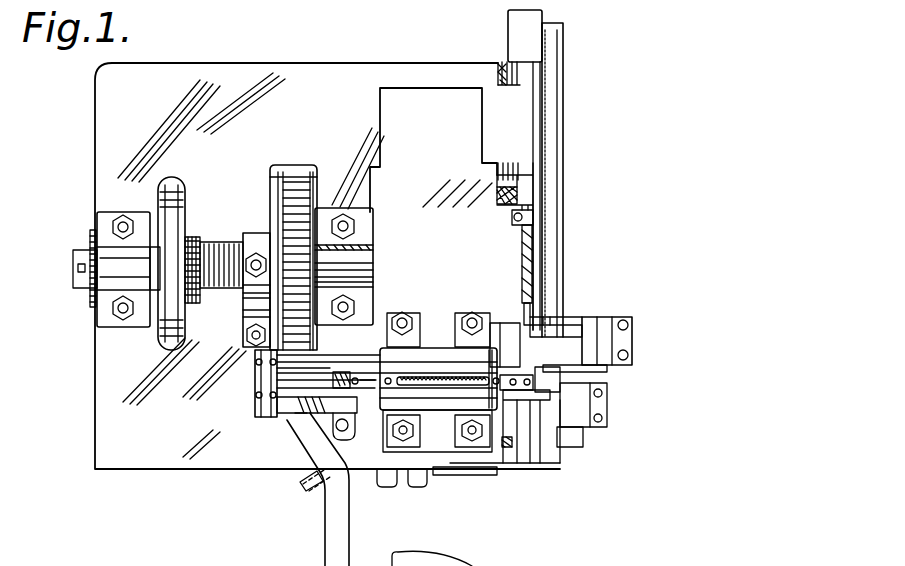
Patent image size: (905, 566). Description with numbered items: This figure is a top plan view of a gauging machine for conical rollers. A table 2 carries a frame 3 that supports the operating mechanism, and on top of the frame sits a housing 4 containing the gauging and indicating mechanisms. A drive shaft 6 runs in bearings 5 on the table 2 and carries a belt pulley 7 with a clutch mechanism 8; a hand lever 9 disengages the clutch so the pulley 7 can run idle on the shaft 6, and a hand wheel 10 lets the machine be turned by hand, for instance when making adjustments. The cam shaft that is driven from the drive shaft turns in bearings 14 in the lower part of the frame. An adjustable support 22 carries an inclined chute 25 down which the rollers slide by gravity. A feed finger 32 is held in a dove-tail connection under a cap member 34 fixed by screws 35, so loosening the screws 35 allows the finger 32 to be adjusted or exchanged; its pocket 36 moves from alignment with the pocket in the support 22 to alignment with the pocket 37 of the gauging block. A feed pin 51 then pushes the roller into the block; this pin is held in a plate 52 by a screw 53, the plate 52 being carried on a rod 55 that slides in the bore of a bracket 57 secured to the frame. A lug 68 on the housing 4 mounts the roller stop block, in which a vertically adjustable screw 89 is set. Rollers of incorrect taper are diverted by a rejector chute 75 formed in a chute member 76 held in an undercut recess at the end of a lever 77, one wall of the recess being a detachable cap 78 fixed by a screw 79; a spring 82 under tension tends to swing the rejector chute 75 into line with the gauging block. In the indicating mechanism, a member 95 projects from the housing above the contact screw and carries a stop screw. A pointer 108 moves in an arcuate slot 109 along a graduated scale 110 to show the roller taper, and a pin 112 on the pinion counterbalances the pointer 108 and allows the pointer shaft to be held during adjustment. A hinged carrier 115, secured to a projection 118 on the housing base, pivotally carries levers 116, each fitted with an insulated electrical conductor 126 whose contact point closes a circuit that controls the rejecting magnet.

The table 2 is at (140, 448).
The frame 3 is at (462, 487).
The housing 4 is at (413, 402).
The bearings 5 is at (125, 257).
The drive shaft 6 is at (72, 268).
The belt pulley 7 is at (288, 203).
The clutch mechanism 8 is at (250, 250).
The hand lever 9 is at (327, 530).
The hand wheel 10 is at (163, 330).
The bearings 14 is at (433, 468).
The support 22 is at (567, 317).
The chute 25 is at (550, 183).
The feed finger 32 is at (580, 362).
The cap member 34 is at (623, 342).
The screws 35 is at (625, 323).
The pocket 36 is at (575, 385).
The pocket 37 is at (500, 463).
The feed pin 51 is at (533, 325).
The plate 52 is at (533, 217).
The screw 53 is at (512, 220).
The rod 55 is at (510, 200).
The bracket 57 is at (512, 113).
The lug 68 is at (505, 340).
The rejector chute 75 is at (545, 440).
The chute member 76 is at (580, 440).
The lever 77 is at (537, 460).
The detachable cap 78 is at (590, 428).
The screw 79 is at (608, 418).
The spring 82 is at (512, 450).
The screw 89 is at (503, 347).
The member 95 is at (554, 560).
The pointer 108 is at (445, 378).
The arcuate slot 109 is at (468, 380).
The graduated scale 110 is at (430, 378).
The pin 112 is at (368, 385).
The carrier 115 is at (310, 418).
The levers 116 is at (257, 368).
The projection 118 is at (257, 411).
The electrical conductor 126 is at (252, 395).